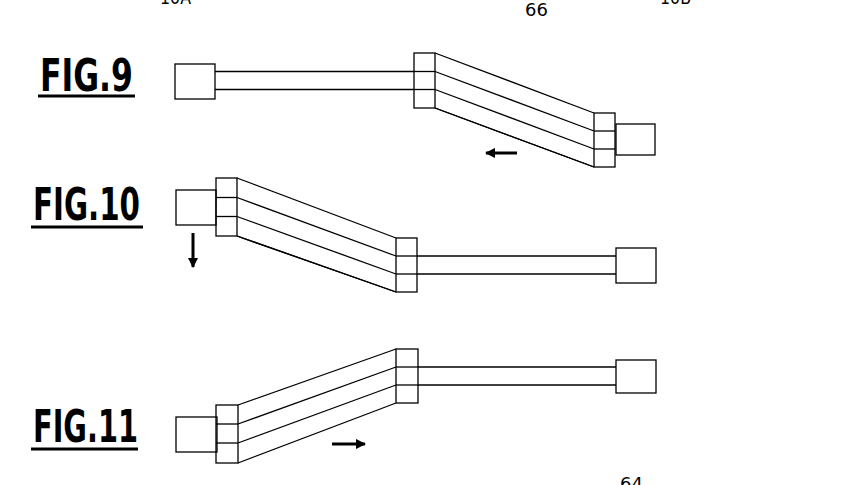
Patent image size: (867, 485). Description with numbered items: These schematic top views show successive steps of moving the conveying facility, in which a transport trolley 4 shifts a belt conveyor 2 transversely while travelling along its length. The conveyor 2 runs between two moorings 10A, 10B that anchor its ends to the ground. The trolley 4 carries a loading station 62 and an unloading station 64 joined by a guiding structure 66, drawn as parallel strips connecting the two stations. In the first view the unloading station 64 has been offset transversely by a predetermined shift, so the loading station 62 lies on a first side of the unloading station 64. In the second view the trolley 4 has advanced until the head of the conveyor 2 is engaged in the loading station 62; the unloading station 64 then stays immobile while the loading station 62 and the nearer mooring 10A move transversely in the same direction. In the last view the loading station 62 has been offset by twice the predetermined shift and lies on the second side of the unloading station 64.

In FIG. 9, the belt conveyor 2 is at (312, 60).
In FIG. 10, the belt conveyor 2 is at (478, 249).
In FIG. 11, the belt conveyor 2 is at (521, 359).
In FIG. 9, the transport trolley 4 is at (541, 78).
In FIG. 10, the transport trolley 4 is at (356, 208).
In FIG. 11, the transport trolley 4 is at (320, 365).
In FIG. 9, the mooring 10A is at (203, 82).
In FIG. 10, the mooring 10A is at (188, 208).
In FIG. 11, the mooring 10A is at (195, 430).
In FIG. 9, the mooring 10B is at (636, 145).
In FIG. 10, the mooring 10B is at (633, 265).
In FIG. 11, the mooring 10B is at (633, 375).
In FIG. 9, the loading station 62 is at (424, 62).
In FIG. 10, the loading station 62 is at (226, 187).
In FIG. 11, the loading station 62 is at (228, 412).
In FIG. 9, the unloading station 64 is at (606, 120).
In FIG. 10, the unloading station 64 is at (409, 247).
In FIG. 11, the unloading station 64 is at (413, 358).
In FIG. 9, the guiding structure 66 is at (549, 143).
In FIG. 10, the guiding structure 66 is at (315, 256).